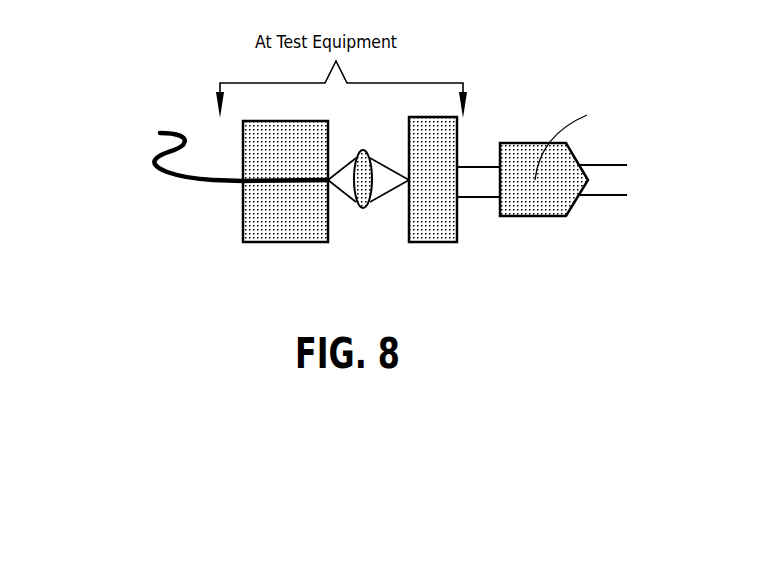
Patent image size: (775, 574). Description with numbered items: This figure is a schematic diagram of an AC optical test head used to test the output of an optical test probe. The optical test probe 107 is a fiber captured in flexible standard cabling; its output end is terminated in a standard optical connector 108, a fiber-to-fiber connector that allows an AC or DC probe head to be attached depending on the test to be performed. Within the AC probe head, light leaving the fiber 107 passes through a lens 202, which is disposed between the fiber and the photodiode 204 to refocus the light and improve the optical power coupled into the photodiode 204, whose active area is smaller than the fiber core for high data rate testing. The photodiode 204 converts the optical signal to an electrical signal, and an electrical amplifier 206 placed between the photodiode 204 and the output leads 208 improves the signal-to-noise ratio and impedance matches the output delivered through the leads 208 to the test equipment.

The optical test probe 107 is at (183, 177).
The optical connector 108 is at (245, 248).
The lens 202 is at (359, 210).
The photodiode 204 is at (407, 245).
The electrical amplifier 206 is at (538, 216).
The output leads 208 is at (472, 178).